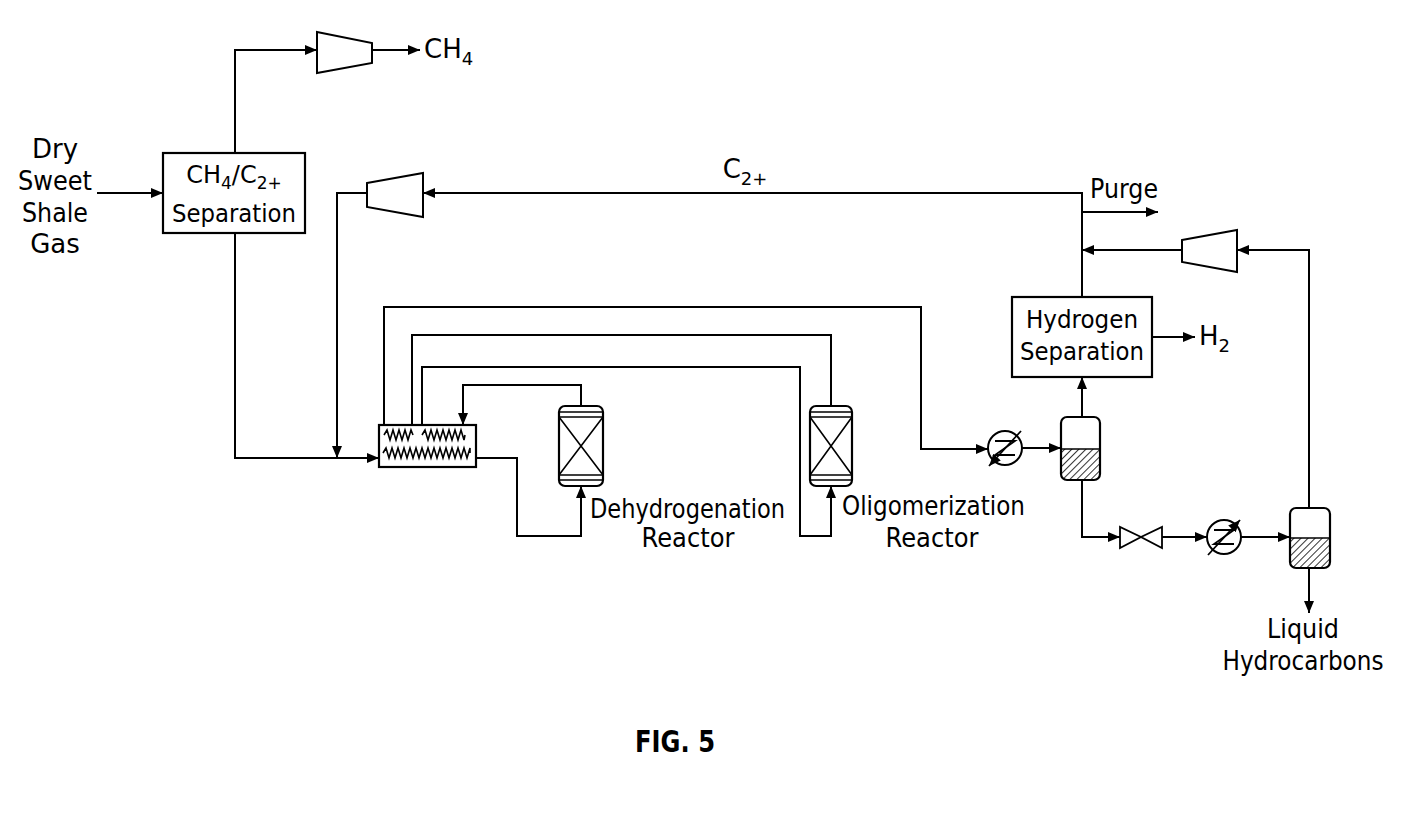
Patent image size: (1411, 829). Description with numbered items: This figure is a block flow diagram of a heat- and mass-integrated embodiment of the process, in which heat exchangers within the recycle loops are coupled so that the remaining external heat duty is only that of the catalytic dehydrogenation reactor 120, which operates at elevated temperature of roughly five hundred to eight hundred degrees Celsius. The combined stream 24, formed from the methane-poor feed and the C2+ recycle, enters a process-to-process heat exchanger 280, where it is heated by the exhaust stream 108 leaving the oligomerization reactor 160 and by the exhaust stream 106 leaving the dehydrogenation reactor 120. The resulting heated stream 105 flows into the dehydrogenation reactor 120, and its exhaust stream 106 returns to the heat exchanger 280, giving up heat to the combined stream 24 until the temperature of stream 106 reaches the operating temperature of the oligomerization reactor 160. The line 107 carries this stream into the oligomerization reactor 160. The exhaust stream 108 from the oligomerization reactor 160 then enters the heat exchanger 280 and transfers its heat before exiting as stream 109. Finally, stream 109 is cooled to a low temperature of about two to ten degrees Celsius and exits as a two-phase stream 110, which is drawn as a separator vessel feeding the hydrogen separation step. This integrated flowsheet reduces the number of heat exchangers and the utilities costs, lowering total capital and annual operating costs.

The combined stream 24 is at (350, 461).
The process-to-process heat exchanger 280 is at (428, 468).
The heated stream 105 is at (543, 537).
The exhaust stream 106 is at (582, 397).
The dehydrogenation reactor 120 is at (605, 445).
The oligomerization reactor feed line 107 is at (813, 537).
The exhaust stream 108 is at (831, 370).
The stream 109 is at (921, 317).
The oligomerization reactor 160 is at (853, 447).
The two-phase stream 110 is at (1037, 452).